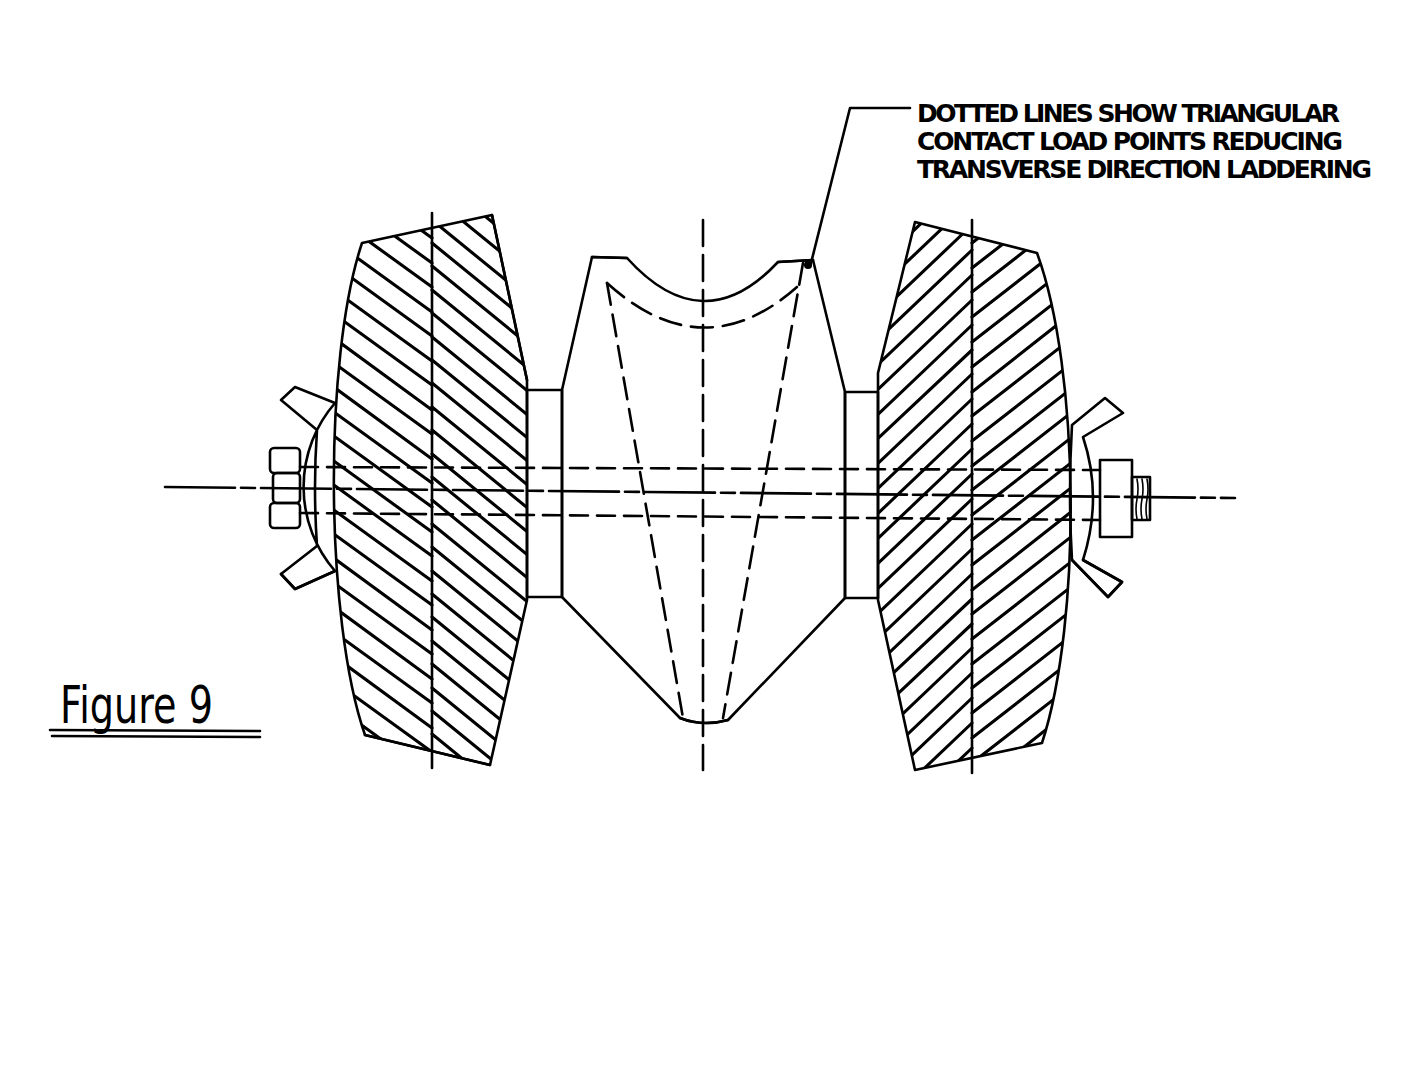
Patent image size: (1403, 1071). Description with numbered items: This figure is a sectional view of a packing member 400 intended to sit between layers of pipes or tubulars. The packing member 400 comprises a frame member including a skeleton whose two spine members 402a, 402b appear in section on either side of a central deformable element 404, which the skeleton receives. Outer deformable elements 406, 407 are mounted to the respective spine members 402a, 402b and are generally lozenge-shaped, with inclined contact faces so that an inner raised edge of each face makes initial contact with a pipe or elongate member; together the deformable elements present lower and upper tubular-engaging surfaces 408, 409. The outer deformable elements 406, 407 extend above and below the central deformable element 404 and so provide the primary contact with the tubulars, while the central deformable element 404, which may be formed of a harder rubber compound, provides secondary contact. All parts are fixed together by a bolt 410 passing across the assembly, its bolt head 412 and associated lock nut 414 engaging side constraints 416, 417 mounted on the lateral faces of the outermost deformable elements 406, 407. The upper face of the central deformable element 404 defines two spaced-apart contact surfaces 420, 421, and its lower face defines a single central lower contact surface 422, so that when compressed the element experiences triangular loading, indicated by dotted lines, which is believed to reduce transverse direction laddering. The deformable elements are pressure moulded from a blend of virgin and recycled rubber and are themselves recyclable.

The packing member 400 is at (217, 194).
The spine member 402a is at (540, 598).
The spine member 402b is at (865, 603).
The central deformable element 404 is at (672, 280).
The outer deformable element 406 is at (348, 260).
The outer deformable element 407 is at (1045, 298).
The lower tubular-engaging surface 408 is at (392, 758).
The upper tubular-engaging surface 409 is at (473, 220).
The bolt 410 is at (307, 437).
The bolt head 412 is at (268, 477).
The lock nut 414 is at (1127, 458).
The side constraint 416 is at (283, 568).
The side constraint 417 is at (1105, 572).
The contact surface 420 is at (610, 255).
The contact surface 421 is at (790, 260).
The central lower contact surface 422 is at (717, 723).